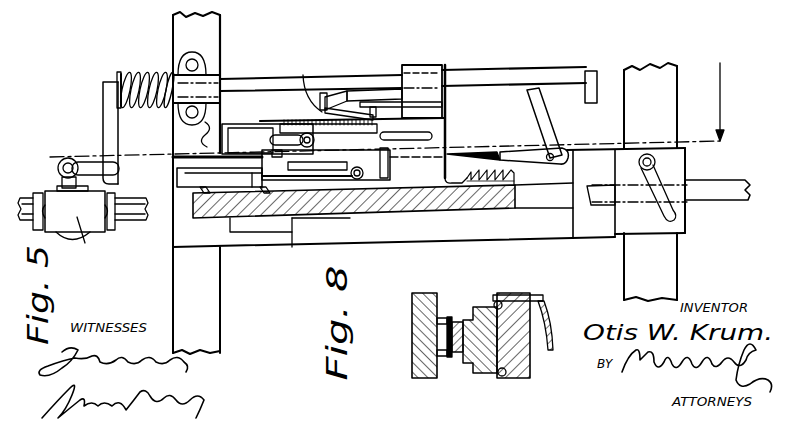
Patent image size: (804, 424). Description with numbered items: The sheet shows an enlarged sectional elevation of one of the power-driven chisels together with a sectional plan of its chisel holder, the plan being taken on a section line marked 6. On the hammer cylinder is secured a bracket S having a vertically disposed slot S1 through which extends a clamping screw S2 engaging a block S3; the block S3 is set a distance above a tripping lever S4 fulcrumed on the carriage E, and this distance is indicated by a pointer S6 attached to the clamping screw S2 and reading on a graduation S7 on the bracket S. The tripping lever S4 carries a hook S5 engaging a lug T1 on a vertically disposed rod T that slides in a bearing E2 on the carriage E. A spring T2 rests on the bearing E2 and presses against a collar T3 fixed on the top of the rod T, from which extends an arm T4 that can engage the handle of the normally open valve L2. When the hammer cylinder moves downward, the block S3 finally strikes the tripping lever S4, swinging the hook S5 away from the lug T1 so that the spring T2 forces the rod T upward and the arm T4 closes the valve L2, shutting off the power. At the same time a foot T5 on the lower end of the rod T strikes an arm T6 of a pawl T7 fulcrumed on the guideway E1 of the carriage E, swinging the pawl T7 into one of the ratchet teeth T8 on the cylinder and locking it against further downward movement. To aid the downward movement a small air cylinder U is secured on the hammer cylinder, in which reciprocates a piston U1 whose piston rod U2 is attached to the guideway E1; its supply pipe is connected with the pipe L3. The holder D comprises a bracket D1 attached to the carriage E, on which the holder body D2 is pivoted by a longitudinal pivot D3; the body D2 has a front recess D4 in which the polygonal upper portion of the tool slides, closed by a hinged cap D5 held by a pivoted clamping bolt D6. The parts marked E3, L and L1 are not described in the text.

In FIG. 5, the carriage E is at (222, 276).
In FIG. 8, the carriage E is at (412, 298).
In FIG. 5, the guideway E1 is at (509, 234).
In FIG. 5, the bearing E2 is at (170, 63).
In FIG. 5, the shaft stub / rack bar E3 is at (630, 236).
In FIG. 5, the rod T is at (390, 77).
In FIG. 5, the lug T1 is at (330, 97).
In FIG. 5, the spring T2 is at (145, 72).
In FIG. 5, the collar T3 is at (121, 72).
In FIG. 5, the arm T4 is at (103, 98).
In FIG. 5, the foot T5 is at (598, 90).
In FIG. 5, the arm of pawl T6 is at (536, 106).
In FIG. 5, the pawl T7 is at (520, 156).
In FIG. 5, the ratchet teeth T8 is at (487, 170).
In FIG. 5, the bracket S is at (257, 132).
In FIG. 5, the slot S1 is at (304, 83).
In FIG. 5, the clamping screw S2 is at (286, 140).
In FIG. 5, the block S3 is at (302, 126).
In FIG. 5, the tripping lever S4 is at (348, 93).
In FIG. 5, the hook S5 is at (318, 97).
In FIG. 5, the pointer S6 is at (300, 134).
In FIG. 5, the graduation S7 is at (412, 135).
In FIG. 5, the air cylinder U is at (190, 185).
In FIG. 5, the piston U1 is at (262, 180).
In FIG. 5, the piston rod U2 is at (322, 212).
In FIG. 5, the valve body L is at (124, 213).
In FIG. 5, the valve pipe / flange L1 is at (25, 222).
In FIG. 5, the valve L2 is at (76, 239).
In FIG. 5, the pipe L3 is at (88, 158).
In FIG. 8, the holder D is at (521, 343).
In FIG. 8, the bracket D1 is at (438, 294).
In FIG. 8, the holder body D2 is at (476, 307).
In FIG. 8, the pivot D3 is at (449, 356).
In FIG. 8, the recess D4 is at (507, 374).
In FIG. 5, the cap D5 is at (658, 223).
In FIG. 8, the cap D5 is at (533, 368).
In FIG. 8, the clamping bolt D6 is at (543, 302).
In FIG. 5, the section line 6- 6 is at (392, 112).